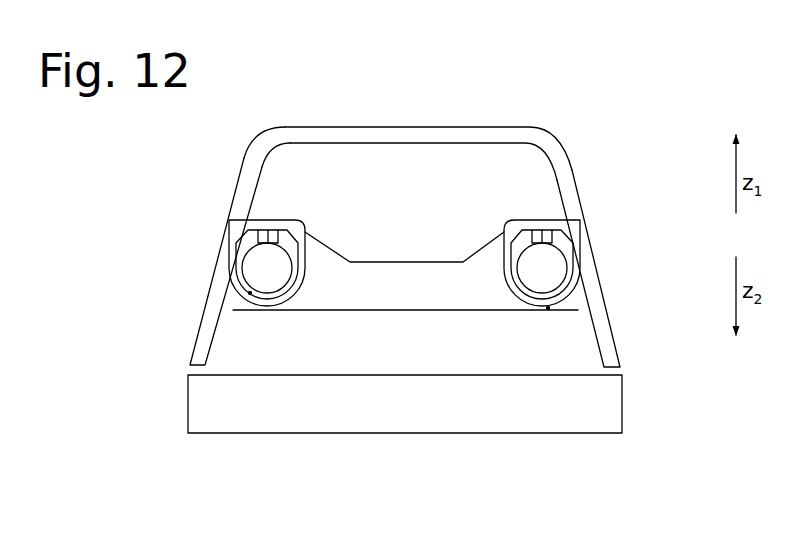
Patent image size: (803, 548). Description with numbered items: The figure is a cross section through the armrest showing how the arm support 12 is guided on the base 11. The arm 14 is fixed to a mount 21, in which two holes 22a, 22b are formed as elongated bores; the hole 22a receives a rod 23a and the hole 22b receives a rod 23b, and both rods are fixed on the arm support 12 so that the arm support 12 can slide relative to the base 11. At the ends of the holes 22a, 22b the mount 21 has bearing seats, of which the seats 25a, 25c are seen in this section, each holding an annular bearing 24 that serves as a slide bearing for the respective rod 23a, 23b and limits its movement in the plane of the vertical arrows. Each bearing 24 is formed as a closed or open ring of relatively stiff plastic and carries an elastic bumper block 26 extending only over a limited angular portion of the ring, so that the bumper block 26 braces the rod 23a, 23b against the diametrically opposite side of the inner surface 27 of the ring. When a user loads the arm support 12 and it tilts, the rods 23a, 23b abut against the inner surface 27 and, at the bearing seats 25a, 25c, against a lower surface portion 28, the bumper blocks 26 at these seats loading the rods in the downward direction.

The base 11 is at (482, 407).
The arm support 12 is at (399, 113).
The arm 14 is at (327, 406).
The mount 21 is at (405, 283).
The hole 22a is at (572, 242).
The hole 22b is at (237, 243).
The rod 23a is at (578, 288).
The rod 23b is at (305, 238).
The annular bearing 24 is at (257, 308).
The bearing seat 25a is at (588, 247).
The bearing seat 25c is at (227, 288).
The elastic bumper block 26 is at (270, 240).
The inner surface 27 is at (234, 244).
The lower surface portion 28 is at (250, 293).